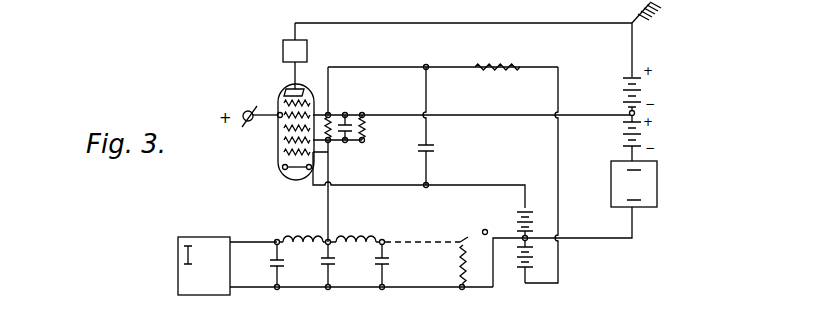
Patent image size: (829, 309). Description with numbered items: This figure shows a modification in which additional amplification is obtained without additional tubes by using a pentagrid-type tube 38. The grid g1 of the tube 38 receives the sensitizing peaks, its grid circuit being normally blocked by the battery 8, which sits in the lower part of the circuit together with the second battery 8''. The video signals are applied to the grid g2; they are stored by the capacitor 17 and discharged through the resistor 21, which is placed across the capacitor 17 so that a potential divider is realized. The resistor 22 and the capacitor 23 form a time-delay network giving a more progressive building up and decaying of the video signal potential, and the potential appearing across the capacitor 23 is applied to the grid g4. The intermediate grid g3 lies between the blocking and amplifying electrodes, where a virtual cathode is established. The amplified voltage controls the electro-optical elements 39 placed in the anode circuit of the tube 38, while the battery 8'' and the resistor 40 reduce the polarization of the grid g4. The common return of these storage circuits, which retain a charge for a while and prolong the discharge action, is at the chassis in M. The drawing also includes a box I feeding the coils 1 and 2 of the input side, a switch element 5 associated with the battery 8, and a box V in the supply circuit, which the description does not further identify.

The chassis M is at (658, 13).
The electro-optical elements 39 is at (275, 49).
The grid g4 is at (290, 104).
The grid g3 is at (278, 131).
The grid g2 is at (279, 143).
The grid g1 is at (281, 156).
The tube 38 is at (297, 175).
The resistor 22 is at (331, 113).
The resistor 21 is at (376, 128).
The capacitor 17 is at (349, 137).
The resistor 40 is at (497, 56).
The capacitor 23 is at (441, 151).
The primary coil 1 is at (303, 232).
The secondary coil 2 is at (357, 231).
The switch resistor 5 is at (474, 258).
The battery 8 is at (517, 217).
The battery 8'' is at (521, 261).
The indicator / source box I is at (204, 266).
The voltmeter V is at (634, 184).